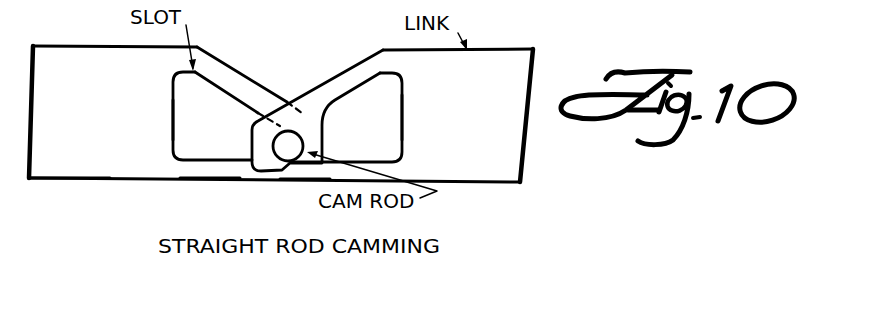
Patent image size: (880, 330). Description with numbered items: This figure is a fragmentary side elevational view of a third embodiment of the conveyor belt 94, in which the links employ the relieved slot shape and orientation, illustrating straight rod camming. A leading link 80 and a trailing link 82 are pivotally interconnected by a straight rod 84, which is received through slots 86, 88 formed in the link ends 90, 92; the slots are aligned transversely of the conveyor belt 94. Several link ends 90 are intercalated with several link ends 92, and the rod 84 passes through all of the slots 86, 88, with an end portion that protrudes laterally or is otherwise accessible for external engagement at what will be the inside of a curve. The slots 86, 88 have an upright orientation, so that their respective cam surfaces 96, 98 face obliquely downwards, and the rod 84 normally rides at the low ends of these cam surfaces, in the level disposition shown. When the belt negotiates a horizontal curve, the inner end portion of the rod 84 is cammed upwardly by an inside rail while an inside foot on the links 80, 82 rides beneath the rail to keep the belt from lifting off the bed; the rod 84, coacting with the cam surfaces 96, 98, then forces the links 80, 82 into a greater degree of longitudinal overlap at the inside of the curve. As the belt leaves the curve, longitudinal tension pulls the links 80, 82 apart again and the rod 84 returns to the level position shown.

The leading link 80 is at (497, 168).
The trailing link 82 is at (109, 166).
The straight rod 84 is at (301, 146).
The slot 86 is at (405, 118).
The slot 88 is at (170, 126).
The link end 90 is at (311, 168).
The link end 92 is at (226, 168).
The conveyor belt 94 is at (283, 70).
The cam surface 96 is at (357, 89).
The cam surface 98 is at (243, 97).